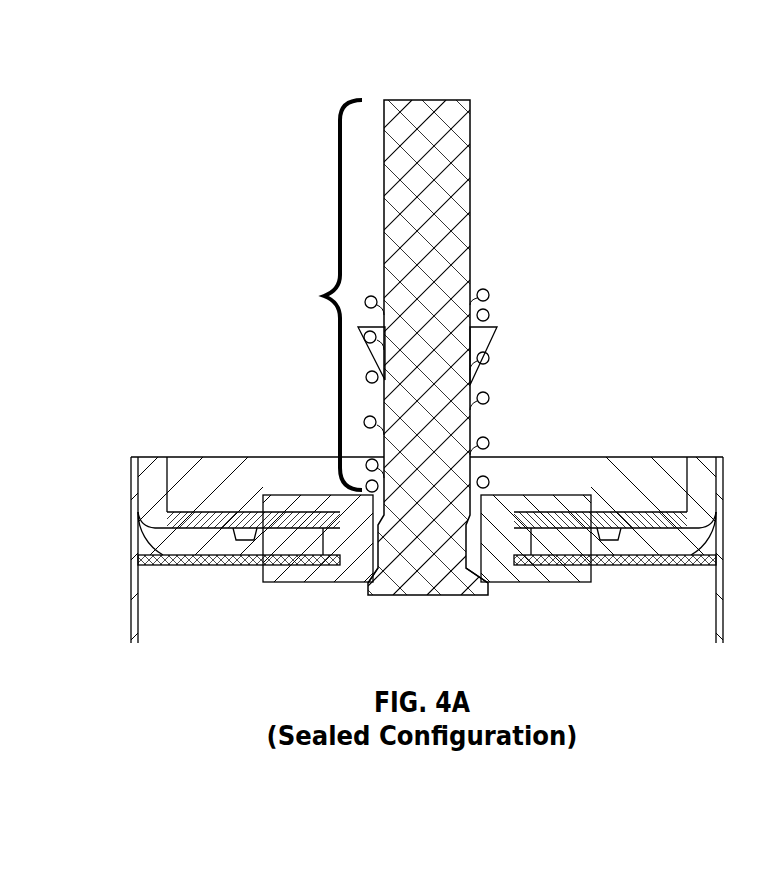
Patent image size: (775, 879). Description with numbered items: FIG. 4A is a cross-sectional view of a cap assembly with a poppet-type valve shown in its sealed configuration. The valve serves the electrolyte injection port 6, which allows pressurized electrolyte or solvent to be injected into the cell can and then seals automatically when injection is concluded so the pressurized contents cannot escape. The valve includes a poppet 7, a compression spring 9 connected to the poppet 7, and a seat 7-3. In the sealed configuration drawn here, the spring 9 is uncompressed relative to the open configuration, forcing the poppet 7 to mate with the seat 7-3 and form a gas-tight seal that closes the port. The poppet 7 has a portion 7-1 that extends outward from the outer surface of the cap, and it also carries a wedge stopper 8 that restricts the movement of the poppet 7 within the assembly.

The electrolyte injection port 6 is at (358, 512).
The poppet 7 is at (440, 150).
The portion of the poppet extending from the outer surface 7-1 is at (324, 296).
The seat 7-3 is at (368, 580).
The wedge stopper 8 is at (487, 330).
The compression spring 9 is at (488, 440).